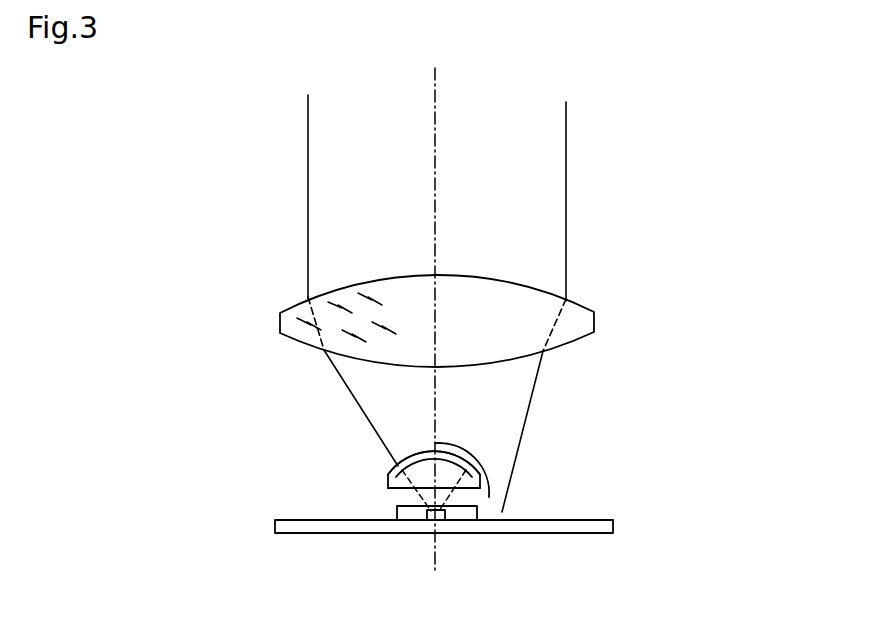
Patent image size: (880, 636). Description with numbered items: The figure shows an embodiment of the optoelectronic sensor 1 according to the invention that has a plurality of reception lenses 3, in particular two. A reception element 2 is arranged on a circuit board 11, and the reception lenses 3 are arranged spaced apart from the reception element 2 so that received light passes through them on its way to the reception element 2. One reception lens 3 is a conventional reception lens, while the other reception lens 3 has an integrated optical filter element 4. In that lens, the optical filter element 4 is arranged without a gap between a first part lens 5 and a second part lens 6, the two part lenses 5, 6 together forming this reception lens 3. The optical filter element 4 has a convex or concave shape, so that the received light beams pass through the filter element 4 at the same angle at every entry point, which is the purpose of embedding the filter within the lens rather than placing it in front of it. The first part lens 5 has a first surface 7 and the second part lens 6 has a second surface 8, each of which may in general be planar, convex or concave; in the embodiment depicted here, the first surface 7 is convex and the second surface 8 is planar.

The optoelectronic sensor 1 is at (642, 130).
The reception element 2 is at (428, 518).
The reception lens 3 is at (582, 313).
The optical filter element 4 is at (453, 468).
The first part lens 5 is at (397, 467).
The second part lens 6 is at (397, 489).
The first surface 7 is at (412, 455).
The second surface 8 is at (408, 492).
The circuit board 11 is at (595, 527).